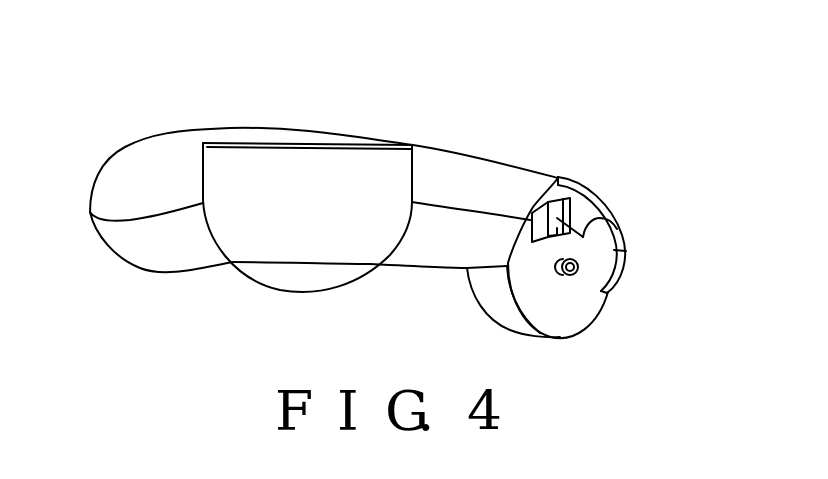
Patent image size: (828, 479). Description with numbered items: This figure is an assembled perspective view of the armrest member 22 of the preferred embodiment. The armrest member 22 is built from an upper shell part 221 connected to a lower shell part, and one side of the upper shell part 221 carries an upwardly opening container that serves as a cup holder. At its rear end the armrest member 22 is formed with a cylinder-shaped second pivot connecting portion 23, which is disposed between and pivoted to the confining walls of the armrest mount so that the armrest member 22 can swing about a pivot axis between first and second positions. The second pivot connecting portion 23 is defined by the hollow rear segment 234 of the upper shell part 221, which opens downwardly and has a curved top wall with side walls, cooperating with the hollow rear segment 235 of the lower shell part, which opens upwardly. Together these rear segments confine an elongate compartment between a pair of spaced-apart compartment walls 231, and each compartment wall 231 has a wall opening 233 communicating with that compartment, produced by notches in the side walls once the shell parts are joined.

The armrest member 22 is at (324, 182).
The upper shell part 221 is at (446, 167).
The second pivot connecting portion 23 is at (551, 195).
The compartment walls 231 is at (467, 290).
The wall opening 233 is at (618, 270).
The hollow rear segment of the upper shell part 234 is at (607, 202).
The hollow rear segment of the lower shell part 235 is at (507, 318).